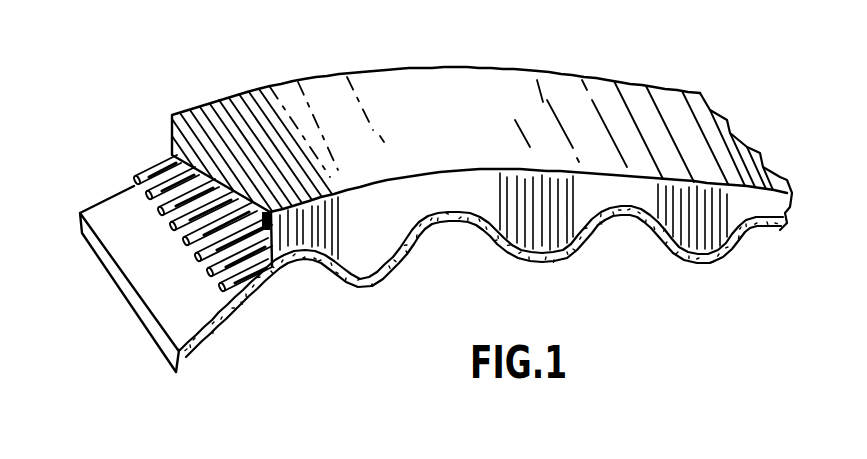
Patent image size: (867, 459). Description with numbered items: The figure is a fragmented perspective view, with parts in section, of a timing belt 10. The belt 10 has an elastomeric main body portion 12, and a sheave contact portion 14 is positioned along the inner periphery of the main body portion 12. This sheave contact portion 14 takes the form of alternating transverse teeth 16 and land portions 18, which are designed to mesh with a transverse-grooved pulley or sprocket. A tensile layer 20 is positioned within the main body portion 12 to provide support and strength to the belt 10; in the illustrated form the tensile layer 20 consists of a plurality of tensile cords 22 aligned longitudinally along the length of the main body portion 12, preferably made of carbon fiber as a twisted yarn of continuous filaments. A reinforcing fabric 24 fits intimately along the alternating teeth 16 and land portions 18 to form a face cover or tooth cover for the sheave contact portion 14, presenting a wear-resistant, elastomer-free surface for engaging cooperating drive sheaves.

The timing belt 10 is at (248, 82).
The elastomeric main body portion 12 is at (472, 135).
The sheave contact portion 14 is at (338, 283).
The transverse teeth 16 is at (382, 250).
The land portions 18 is at (467, 228).
The tensile layer 20 is at (147, 163).
The tensile cords 22 is at (168, 229).
The reinforcing fabric 24 is at (633, 225).